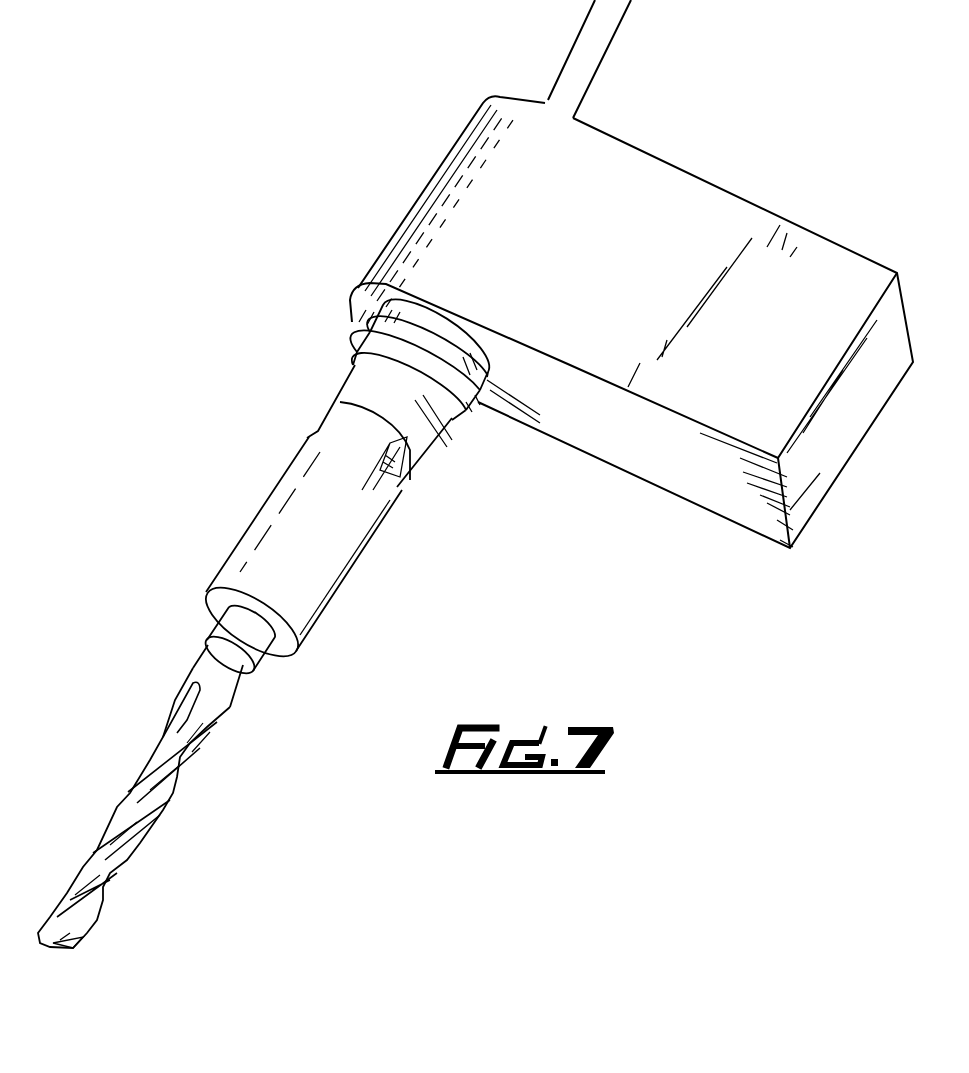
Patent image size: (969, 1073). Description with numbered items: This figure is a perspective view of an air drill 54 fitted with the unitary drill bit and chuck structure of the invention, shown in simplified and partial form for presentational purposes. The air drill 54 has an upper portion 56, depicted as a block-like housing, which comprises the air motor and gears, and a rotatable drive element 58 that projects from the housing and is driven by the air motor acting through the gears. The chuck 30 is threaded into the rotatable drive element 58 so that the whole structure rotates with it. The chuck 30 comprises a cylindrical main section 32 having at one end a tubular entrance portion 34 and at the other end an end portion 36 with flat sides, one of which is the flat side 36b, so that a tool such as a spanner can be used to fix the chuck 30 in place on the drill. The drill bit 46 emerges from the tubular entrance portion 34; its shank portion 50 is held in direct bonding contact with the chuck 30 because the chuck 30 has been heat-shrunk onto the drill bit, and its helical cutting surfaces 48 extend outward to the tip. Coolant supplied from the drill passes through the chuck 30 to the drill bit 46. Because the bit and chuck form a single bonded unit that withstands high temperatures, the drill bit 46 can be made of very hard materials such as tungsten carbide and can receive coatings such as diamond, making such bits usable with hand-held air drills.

The chuck 30 is at (213, 508).
The cylindrical main section 32 is at (343, 567).
The tubular entrance portion 34 is at (227, 632).
The end portion 36 is at (340, 423).
The flat side 36b is at (410, 477).
The drill bit 46 is at (133, 735).
The cutting surfaces 48 is at (135, 812).
The shank portion 50 is at (227, 677).
The air drill 54 is at (424, 122).
The upper portion 56 is at (686, 200).
The rotatable drive element 58 is at (364, 387).